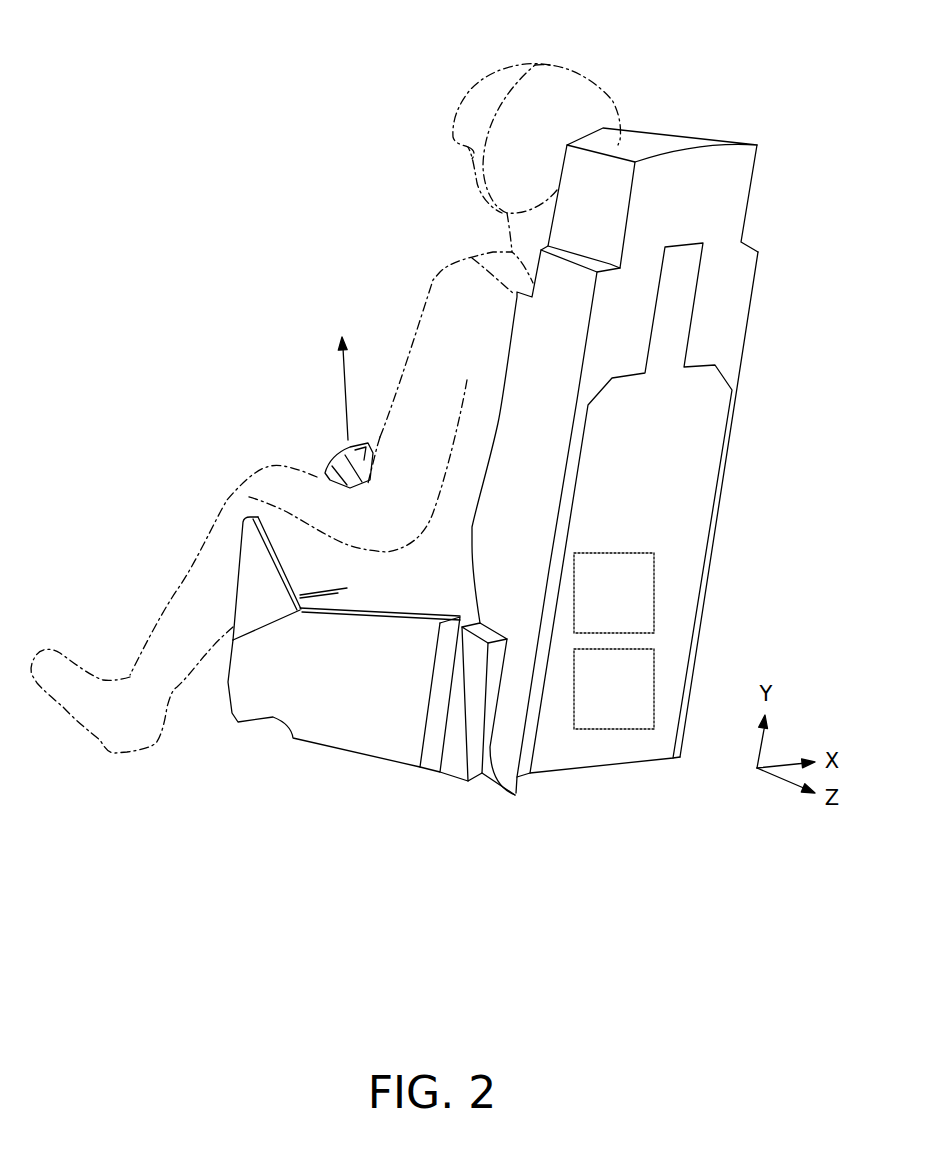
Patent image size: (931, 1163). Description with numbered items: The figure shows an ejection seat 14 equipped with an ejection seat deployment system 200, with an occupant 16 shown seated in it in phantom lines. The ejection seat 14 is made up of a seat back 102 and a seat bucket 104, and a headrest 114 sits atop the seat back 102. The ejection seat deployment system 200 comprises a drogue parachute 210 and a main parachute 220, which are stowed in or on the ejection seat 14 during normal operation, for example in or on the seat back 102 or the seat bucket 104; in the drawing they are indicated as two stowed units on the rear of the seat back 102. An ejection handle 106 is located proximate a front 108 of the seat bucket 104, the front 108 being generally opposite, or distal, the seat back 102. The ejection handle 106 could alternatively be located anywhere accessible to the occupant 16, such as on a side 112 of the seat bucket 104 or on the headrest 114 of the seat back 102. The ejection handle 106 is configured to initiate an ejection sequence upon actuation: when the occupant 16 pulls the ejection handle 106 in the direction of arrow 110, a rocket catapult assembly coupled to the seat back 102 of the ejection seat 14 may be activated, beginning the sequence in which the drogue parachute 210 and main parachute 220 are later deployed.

The ejection seat 14 is at (752, 106).
The occupant 16 is at (616, 75).
The seat back 102 is at (703, 334).
The seat bucket 104 is at (371, 671).
The ejection handle 106 is at (307, 446).
The front 108 is at (347, 598).
The arrow 110 is at (343, 365).
The side 112 is at (351, 704).
The headrest 114 is at (648, 137).
The ejection seat deployment system 200 is at (679, 641).
The drogue parachute 210 is at (593, 701).
The main parachute 220 is at (593, 605).